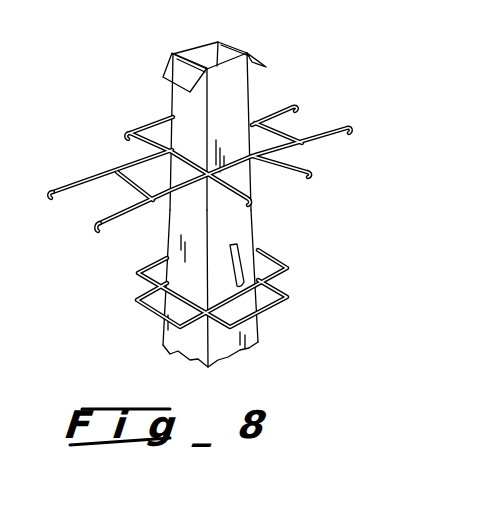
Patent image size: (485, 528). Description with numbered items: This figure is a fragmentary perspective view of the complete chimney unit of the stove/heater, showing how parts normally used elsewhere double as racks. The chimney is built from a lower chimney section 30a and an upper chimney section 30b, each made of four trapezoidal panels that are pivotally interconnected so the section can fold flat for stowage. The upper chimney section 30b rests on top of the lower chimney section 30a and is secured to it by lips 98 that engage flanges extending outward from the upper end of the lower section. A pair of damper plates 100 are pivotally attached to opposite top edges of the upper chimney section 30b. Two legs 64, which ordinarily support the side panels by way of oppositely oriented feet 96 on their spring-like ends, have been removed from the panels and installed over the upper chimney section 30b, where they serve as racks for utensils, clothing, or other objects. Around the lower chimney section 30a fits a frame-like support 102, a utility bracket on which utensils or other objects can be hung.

The lower chimney section 30a is at (253, 337).
The upper chimney section 30b is at (245, 88).
The legs 64 is at (130, 133).
The feet 96 is at (100, 224).
The lips 98 is at (245, 262).
The damper plates 100 is at (167, 63).
The frame-like support 102 is at (289, 272).